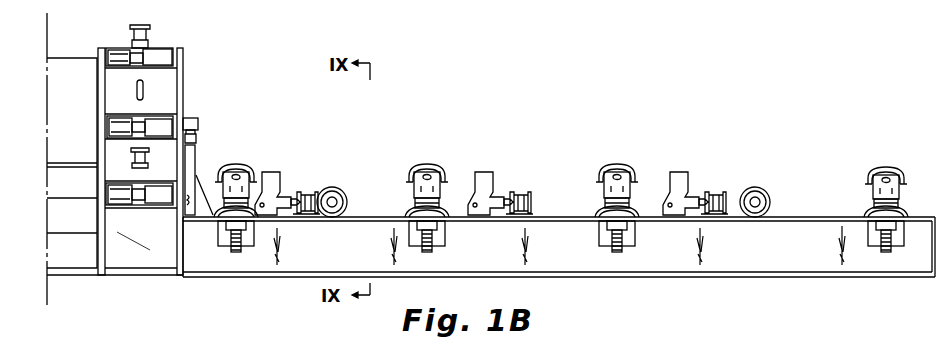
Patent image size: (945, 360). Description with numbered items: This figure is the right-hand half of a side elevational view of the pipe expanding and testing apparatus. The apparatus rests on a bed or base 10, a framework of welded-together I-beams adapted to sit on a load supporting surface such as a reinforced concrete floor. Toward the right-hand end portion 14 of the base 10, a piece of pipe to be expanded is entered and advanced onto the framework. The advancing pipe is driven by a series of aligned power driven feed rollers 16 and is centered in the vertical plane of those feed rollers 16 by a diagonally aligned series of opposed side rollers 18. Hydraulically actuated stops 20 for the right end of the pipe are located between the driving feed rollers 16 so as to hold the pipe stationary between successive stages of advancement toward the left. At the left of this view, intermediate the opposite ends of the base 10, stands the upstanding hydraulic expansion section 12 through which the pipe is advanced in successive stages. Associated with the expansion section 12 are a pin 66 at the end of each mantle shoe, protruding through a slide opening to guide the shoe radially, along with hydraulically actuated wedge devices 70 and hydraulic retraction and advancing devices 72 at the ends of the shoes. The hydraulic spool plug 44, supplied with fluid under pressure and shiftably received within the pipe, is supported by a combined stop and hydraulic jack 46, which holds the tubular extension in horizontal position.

The bed or base 10 is at (605, 270).
The hydraulic expansion section 12 is at (80, 57).
The right-hand end portion 14 is at (920, 265).
The power driven feed rollers 16 is at (340, 188).
The opposed side rollers 18 is at (628, 152).
The hydraulically actuated stops 20 is at (264, 173).
The spool plug 44 is at (198, 124).
The combined stop and hydraulic jack 46 is at (195, 158).
The pin 66 is at (137, 90).
The hydraulically actuated wedge devices 70 is at (163, 125).
The hydraulic retraction and advancing devices 72 is at (133, 155).